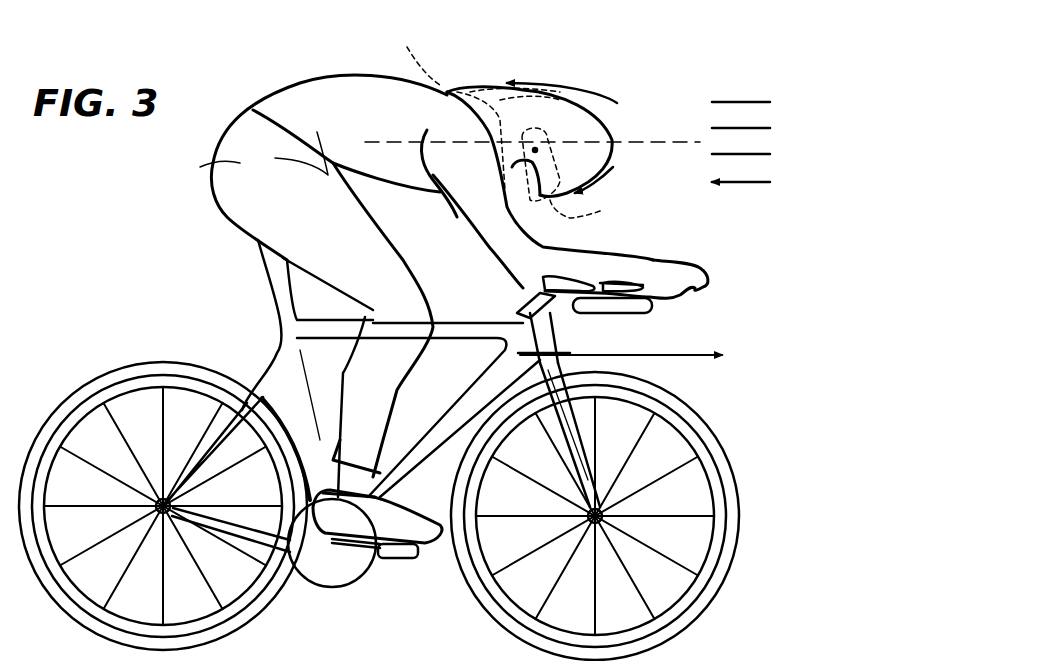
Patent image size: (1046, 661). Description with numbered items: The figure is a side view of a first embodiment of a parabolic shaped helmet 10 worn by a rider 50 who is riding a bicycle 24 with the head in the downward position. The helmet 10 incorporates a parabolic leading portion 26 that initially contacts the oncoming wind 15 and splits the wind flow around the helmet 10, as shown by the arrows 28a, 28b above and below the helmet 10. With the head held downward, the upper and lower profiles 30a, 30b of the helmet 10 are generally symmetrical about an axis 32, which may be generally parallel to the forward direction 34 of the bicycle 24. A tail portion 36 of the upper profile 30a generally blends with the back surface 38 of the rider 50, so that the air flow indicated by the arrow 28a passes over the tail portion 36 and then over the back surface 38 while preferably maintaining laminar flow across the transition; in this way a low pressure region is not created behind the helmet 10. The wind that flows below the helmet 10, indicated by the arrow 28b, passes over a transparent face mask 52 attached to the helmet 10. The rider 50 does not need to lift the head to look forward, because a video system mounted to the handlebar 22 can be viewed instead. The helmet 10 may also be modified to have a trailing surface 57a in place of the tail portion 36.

The helmet 10 is at (503, 62).
The oncoming wind 15 is at (748, 102).
The handlebar 22 is at (590, 337).
The bicycle 24 is at (764, 430).
The parabolic leading portion 26 is at (612, 135).
The upper wind flow arrow 28a is at (560, 88).
The lower wind flow arrow 28b is at (607, 180).
The upper profile 30a is at (505, 85).
The lower profile 30b is at (603, 167).
The axis 32 is at (670, 140).
The forward direction 34 is at (697, 350).
The tail portion 36 is at (470, 110).
The back surface 38 is at (357, 75).
The rider 50 is at (213, 163).
The transparent face mask 52 is at (594, 212).
The trailing surface 57a is at (411, 53).